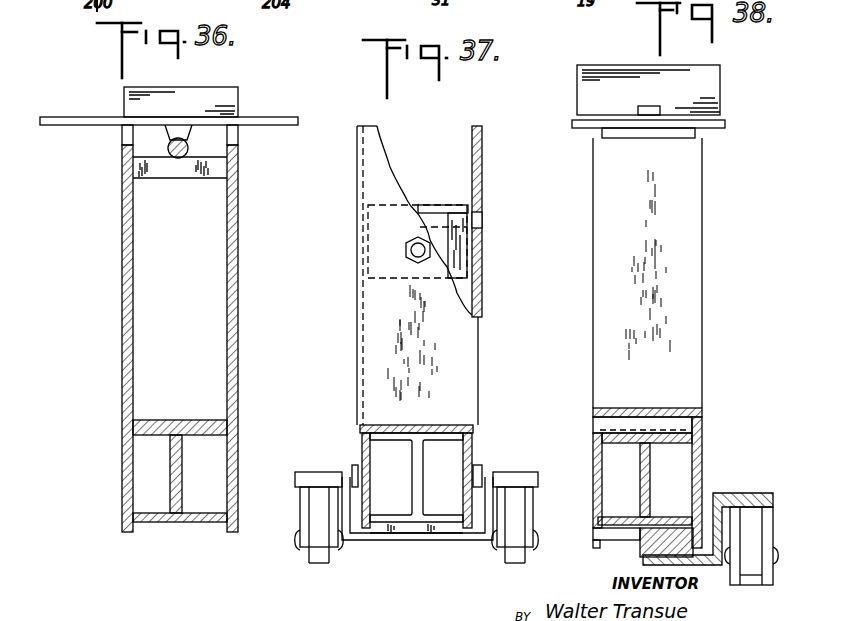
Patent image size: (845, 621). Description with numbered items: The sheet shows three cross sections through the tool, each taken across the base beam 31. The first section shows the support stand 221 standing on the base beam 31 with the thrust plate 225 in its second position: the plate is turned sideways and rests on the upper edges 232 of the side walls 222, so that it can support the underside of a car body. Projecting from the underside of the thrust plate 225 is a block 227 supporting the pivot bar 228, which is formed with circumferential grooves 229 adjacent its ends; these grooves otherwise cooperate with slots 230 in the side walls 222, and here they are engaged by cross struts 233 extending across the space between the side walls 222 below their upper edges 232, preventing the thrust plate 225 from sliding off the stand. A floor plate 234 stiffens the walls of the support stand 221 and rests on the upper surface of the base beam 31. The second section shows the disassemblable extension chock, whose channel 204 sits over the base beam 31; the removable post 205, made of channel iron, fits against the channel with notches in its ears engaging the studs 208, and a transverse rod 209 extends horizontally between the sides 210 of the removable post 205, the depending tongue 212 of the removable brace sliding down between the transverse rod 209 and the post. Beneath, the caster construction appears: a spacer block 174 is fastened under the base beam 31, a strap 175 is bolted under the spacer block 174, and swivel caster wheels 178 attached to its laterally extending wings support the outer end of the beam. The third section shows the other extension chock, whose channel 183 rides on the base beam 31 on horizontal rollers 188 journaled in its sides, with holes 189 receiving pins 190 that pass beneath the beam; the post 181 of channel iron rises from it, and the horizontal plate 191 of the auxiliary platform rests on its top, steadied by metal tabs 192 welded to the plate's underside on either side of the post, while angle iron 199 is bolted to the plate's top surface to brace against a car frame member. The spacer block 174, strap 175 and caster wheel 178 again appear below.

In FIG. 36, the base beam 31 is at (185, 522).
In FIG. 37, the base beam 31 is at (420, 462).
In FIG. 38, the base beam 31 is at (640, 455).
In FIG. 37, the spacer block 174 is at (403, 540).
In FIG. 38, the spacer block 174 is at (650, 548).
In FIG. 38, the strap 175 is at (722, 492).
In FIG. 37, the swivel caster wheel 178 is at (310, 560).
In FIG. 38, the swivel caster wheel 178 is at (762, 572).
In FIG. 38, the post 181 is at (690, 264).
In FIG. 38, the channel 183 is at (700, 452).
In FIG. 38, the horizontal rollers 188 is at (662, 412).
In FIG. 38, the holes 189 is at (592, 530).
In FIG. 38, the pins 190 is at (610, 541).
In FIG. 38, the horizontal plate 191 is at (725, 125).
In FIG. 38, the metal tabs 192 is at (682, 140).
In FIG. 38, the angle iron 199 is at (712, 100).
In FIG. 37, the channel 204 is at (388, 425).
In FIG. 37, the removable post 205 is at (462, 372).
In FIG. 37, the studs 208 is at (352, 462).
In FIG. 37, the transverse rod 209 is at (482, 215).
In FIG. 37, the sides 210 is at (482, 293).
In FIG. 37, the depending tongue 212 is at (468, 258).
In FIG. 36, the support stand 221 is at (120, 262).
In FIG. 36, the side walls 222 is at (130, 302).
In FIG. 36, the thrust plate 225 is at (50, 116).
In FIG. 36, the block 227 is at (166, 133).
In FIG. 36, the pivot bar 228 is at (180, 158).
In FIG. 36, the circumferential grooves 229 is at (178, 138).
In FIG. 36, the slots 230 is at (122, 133).
In FIG. 36, the upper edges 232 is at (124, 108).
In FIG. 36, the cross struts 233 is at (212, 167).
In FIG. 36, the floor plate 234 is at (200, 432).